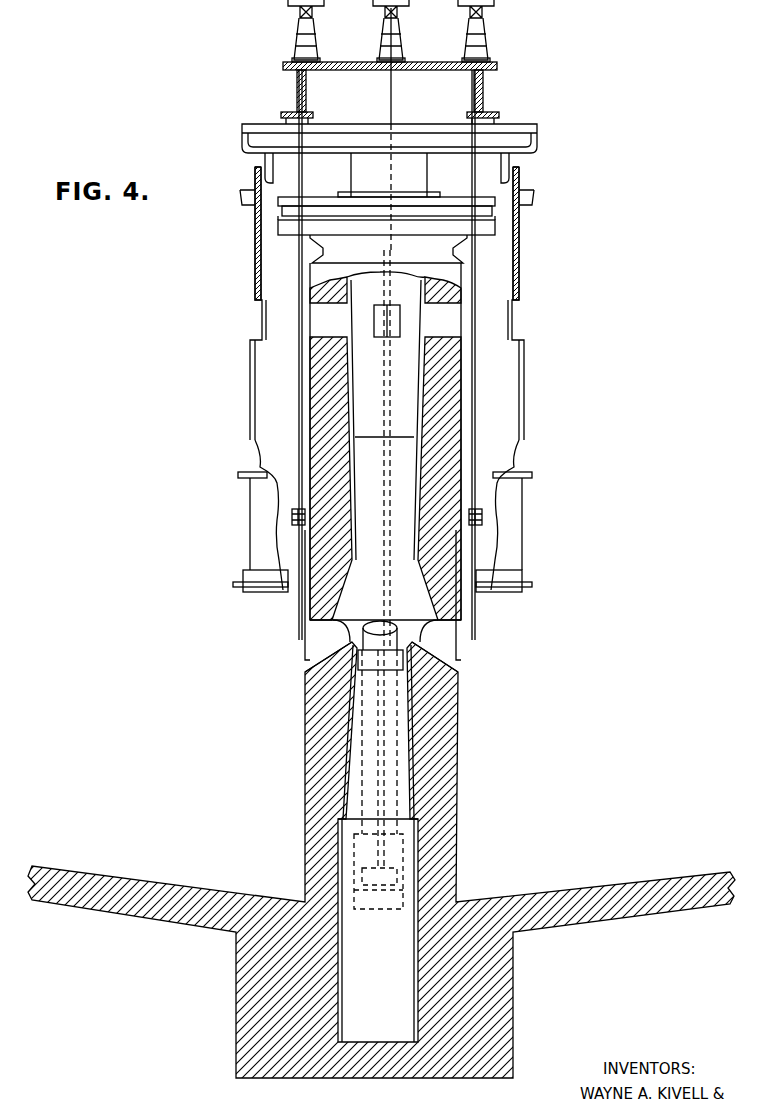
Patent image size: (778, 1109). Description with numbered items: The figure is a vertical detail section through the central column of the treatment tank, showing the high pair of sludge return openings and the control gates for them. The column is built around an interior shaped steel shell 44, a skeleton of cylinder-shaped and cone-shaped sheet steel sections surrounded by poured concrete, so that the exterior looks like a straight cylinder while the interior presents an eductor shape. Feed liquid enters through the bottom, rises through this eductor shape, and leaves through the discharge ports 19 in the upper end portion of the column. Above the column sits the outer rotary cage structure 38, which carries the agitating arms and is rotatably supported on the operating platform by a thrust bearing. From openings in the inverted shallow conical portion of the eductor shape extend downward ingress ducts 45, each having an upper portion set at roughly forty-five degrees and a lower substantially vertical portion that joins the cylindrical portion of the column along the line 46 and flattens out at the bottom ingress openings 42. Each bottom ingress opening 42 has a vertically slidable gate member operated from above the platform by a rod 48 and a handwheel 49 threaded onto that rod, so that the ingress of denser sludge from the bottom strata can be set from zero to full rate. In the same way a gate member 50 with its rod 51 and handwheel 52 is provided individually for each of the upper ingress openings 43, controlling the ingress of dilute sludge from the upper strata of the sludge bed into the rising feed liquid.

The handwheel 52 is at (297, 10).
The handwheel 49 is at (397, 10).
The outer rotary cage structure 38 is at (254, 383).
The discharge ports 19 is at (340, 320).
The shaped steel shell 44 is at (421, 382).
The rod 48 is at (390, 425).
The line 46 is at (386, 626).
The gate member 50 is at (462, 640).
The upper ingress openings 43 is at (458, 672).
The ingress duct 45 is at (425, 768).
The bottom ingress openings 42 is at (380, 905).
The rod 51 is at (470, 553).